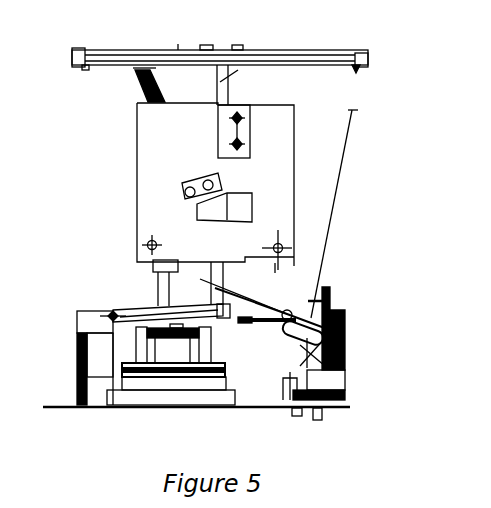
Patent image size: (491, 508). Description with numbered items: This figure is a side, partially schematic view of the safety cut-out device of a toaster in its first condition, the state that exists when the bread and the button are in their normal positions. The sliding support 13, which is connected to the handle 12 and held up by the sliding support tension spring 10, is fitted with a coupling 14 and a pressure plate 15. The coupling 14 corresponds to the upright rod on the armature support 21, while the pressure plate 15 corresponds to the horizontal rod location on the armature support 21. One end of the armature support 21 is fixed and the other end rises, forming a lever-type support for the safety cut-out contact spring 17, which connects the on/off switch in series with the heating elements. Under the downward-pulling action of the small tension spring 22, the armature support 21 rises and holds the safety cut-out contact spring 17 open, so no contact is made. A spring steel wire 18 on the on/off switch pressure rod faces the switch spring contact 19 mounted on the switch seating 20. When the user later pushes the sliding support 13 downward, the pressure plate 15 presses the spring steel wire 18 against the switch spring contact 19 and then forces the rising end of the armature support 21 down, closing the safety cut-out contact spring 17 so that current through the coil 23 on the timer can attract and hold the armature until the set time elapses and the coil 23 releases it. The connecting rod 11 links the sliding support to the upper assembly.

The sliding support tension spring 10 is at (147, 72).
The connecting rod 11 is at (258, 56).
The handle 12 is at (246, 120).
The sliding support 13 is at (268, 158).
The coupling 14 is at (183, 186).
The pressure plate 15 is at (253, 202).
The safety cut-out contact spring 17 is at (355, 214).
The spring steel wire 18 is at (215, 288).
The switch spring contact 19 is at (343, 323).
The switch seating 20 is at (347, 362).
The armature support 21 is at (147, 307).
The small tension spring 22 is at (65, 364).
The coil 23 is at (128, 389).